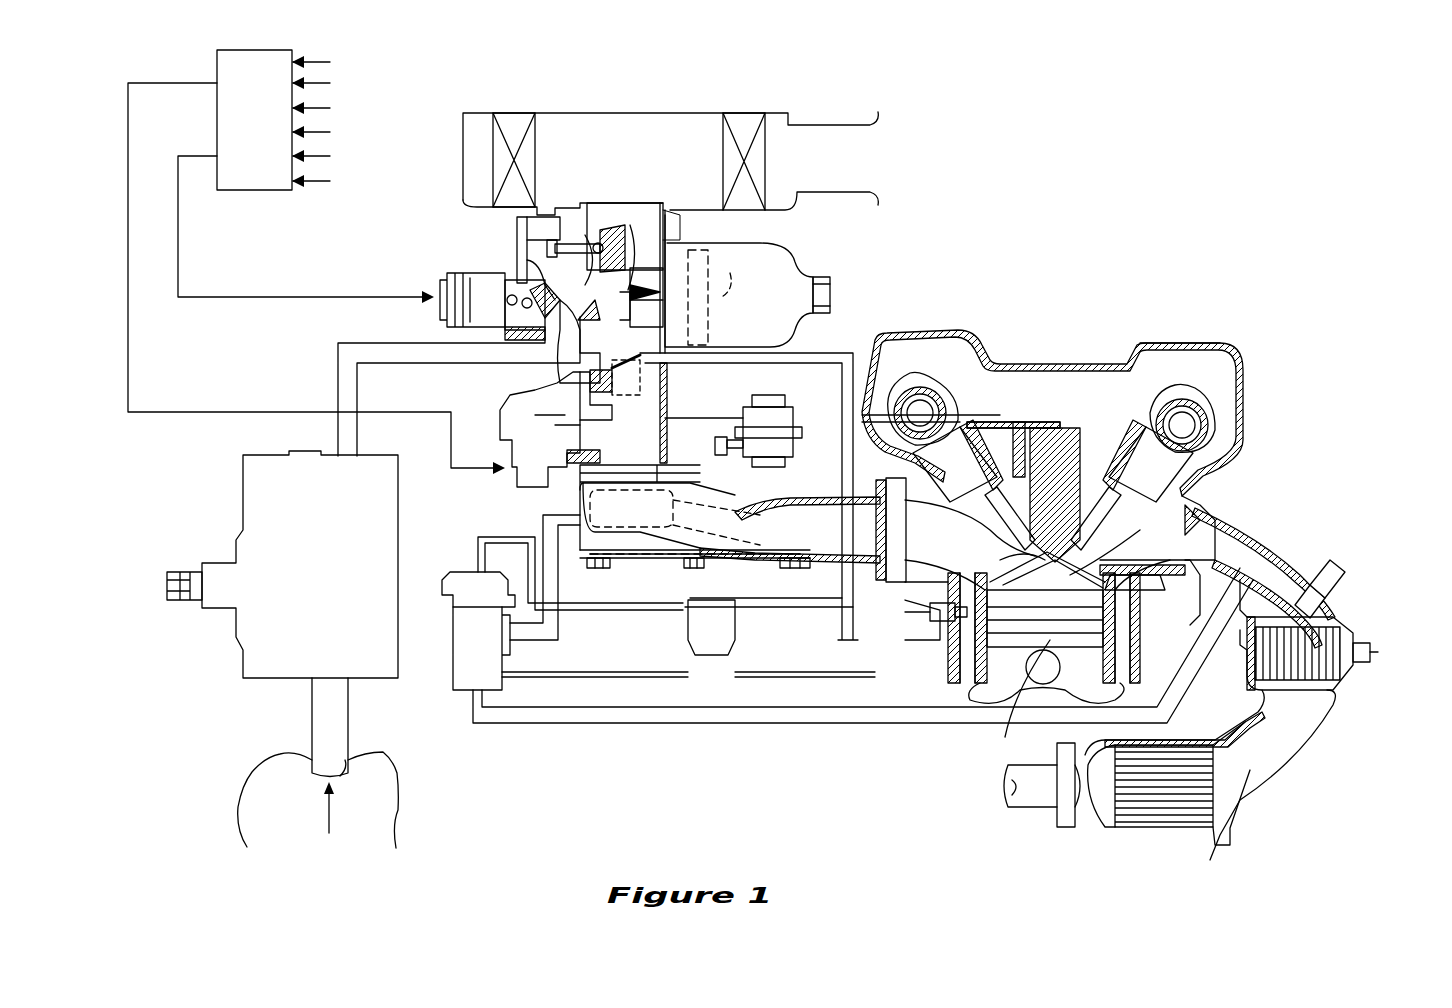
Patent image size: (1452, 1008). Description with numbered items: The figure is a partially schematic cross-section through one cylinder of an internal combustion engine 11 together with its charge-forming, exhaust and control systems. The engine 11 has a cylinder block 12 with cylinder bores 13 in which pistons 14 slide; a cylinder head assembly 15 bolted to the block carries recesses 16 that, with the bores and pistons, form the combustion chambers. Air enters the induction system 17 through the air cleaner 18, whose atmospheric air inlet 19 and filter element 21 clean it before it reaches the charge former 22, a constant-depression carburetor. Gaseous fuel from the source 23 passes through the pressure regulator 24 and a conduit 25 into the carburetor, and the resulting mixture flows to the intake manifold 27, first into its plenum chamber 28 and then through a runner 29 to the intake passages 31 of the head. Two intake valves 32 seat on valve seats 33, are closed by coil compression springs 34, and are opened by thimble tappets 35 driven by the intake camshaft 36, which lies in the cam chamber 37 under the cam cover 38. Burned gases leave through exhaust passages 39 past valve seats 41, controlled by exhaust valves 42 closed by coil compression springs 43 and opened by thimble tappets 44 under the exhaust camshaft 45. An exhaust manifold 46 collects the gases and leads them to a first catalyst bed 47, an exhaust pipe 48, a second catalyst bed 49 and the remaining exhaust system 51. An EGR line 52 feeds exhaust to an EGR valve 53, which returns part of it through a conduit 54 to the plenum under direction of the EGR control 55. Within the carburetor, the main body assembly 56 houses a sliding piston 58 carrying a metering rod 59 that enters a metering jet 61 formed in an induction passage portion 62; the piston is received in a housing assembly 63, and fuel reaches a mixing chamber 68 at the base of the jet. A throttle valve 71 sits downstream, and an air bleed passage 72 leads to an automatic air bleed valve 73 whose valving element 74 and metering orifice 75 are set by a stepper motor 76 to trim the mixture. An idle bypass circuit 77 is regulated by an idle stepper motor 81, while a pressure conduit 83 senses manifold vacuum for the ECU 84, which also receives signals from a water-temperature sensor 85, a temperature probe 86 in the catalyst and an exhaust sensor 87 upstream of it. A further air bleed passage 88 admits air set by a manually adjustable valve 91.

The internal combustion engine 11 is at (1078, 334).
The cylinder block 12 is at (1148, 637).
The cylinder bores 13 is at (1160, 625).
The pistons 14 is at (985, 677).
The cylinder head assembly 15 is at (1208, 483).
The recesses 16 is at (1020, 700).
The induction system 17 is at (408, 133).
The air cleaner 18 is at (659, 114).
The atmospheric air inlet 19 is at (815, 112).
The filter element 21 is at (512, 125).
The charge former 22 is at (820, 273).
The source of gaseous fuel 23 is at (405, 810).
The pressure regulator 24 is at (243, 497).
The conduit 25 is at (338, 372).
The intake manifold 27 is at (600, 570).
The plenum chamber 28 is at (680, 560).
The runner 29 is at (745, 490).
The intake passages 31 is at (803, 530).
The intake valves 32 is at (990, 550).
The valve seats 33 is at (940, 622).
The coil compression springs 34 is at (1018, 420).
The thimble tappets 35 is at (990, 440).
The intake camshaft 36 is at (935, 392).
The cam chamber 37 is at (1054, 410).
The cam cover 38 is at (1170, 345).
The exhaust passages 39 is at (1175, 560).
The valve seats 41 is at (1160, 590).
The exhaust valves 42 is at (1120, 560).
The coil compression springs 43 is at (1180, 500).
The thimble tappets 44 is at (1120, 445).
The exhaust camshaft 45 is at (1170, 405).
The exhaust manifold 46 is at (1270, 560).
The first catalyst bed 47 is at (1255, 645).
The exhaust pipe 48 is at (1280, 760).
The second catalyst bed 49 is at (1135, 815).
The exhaust system 51 is at (1012, 808).
The EGR line 52 is at (710, 723).
The EGR valve 53 is at (460, 700).
The conduit 54 is at (565, 627).
The EGR control 55 is at (730, 648).
The main body assembly 56 is at (670, 392).
The sliding piston 58 is at (718, 297).
The metering rod 59 is at (646, 275).
The metering jet 61 is at (560, 350).
The induction passage portion 62 is at (635, 315).
The housing assembly 63 is at (760, 243).
The mixing chamber 68 is at (612, 240).
The throttle valve 71 is at (620, 380).
The air bleed passage 72 is at (520, 232).
The automatic air bleed valve 73 is at (497, 278).
The valving element 74 is at (520, 340).
The metering orifice 75 is at (530, 290).
The stepper motor 76 is at (440, 268).
The idle bypass circuit 77 is at (575, 405).
The idle stepper motor 81 is at (500, 468).
The pressure conduit 83 is at (690, 420).
The ECU 84 is at (268, 50).
The water-temperature sensor 85 is at (864, 619).
The temperature probe 86 is at (1376, 637).
The exhaust sensor 87 is at (1321, 567).
The air bleed passage 88 is at (565, 240).
The manually adjustable valve 91 is at (540, 262).